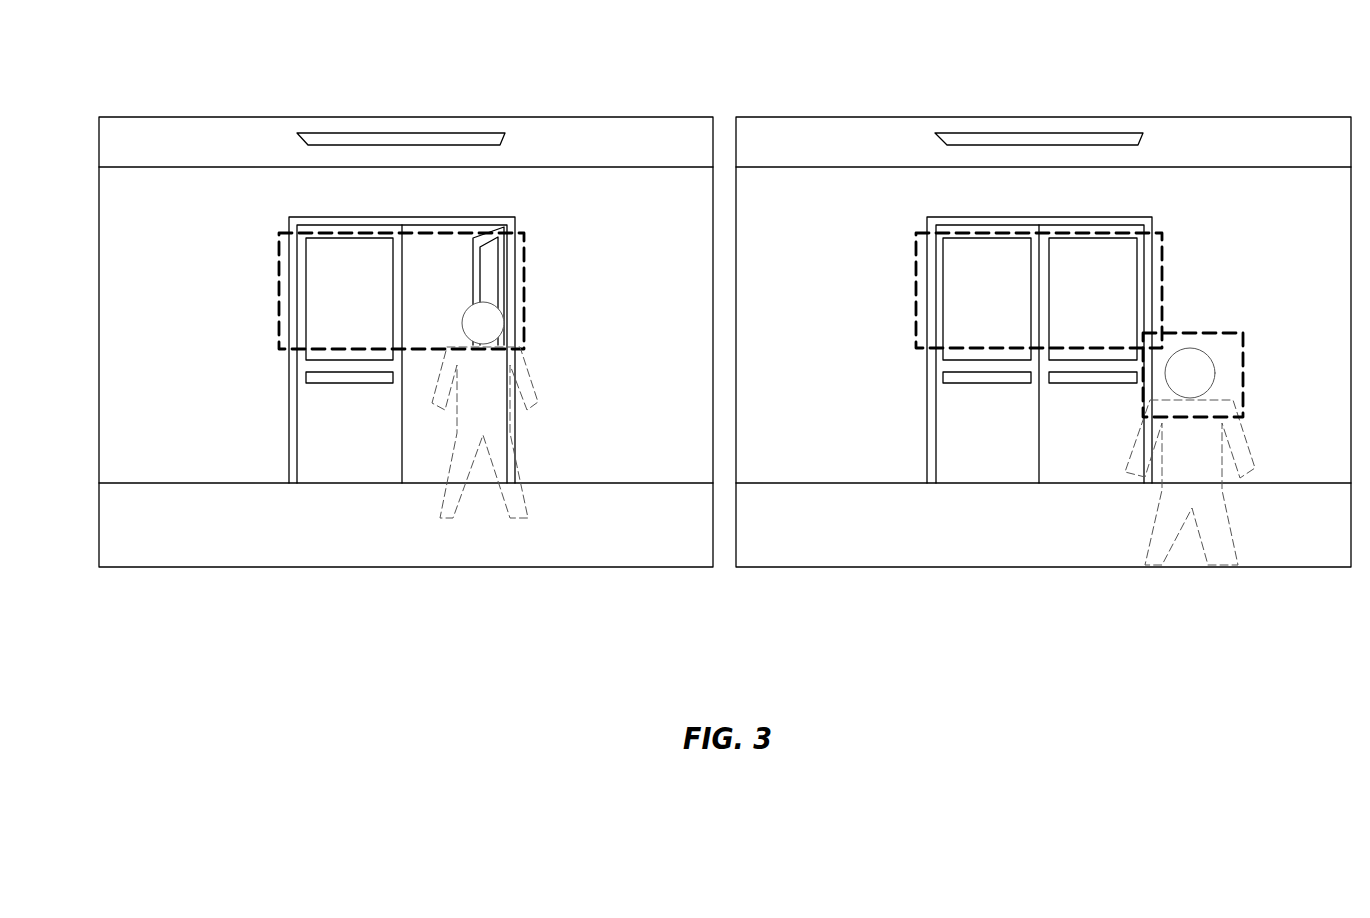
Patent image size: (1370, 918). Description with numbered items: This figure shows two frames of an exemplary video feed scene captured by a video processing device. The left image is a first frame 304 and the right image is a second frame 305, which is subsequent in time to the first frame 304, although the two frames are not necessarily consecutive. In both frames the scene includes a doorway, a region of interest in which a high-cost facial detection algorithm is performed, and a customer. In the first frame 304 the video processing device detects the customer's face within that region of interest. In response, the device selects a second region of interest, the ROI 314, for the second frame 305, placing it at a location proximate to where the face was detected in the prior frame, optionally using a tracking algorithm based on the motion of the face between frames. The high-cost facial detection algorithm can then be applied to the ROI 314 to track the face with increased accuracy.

The first frame 304 is at (298, 117).
The second frame 305 is at (918, 117).
The ROI 314 is at (1193, 333).